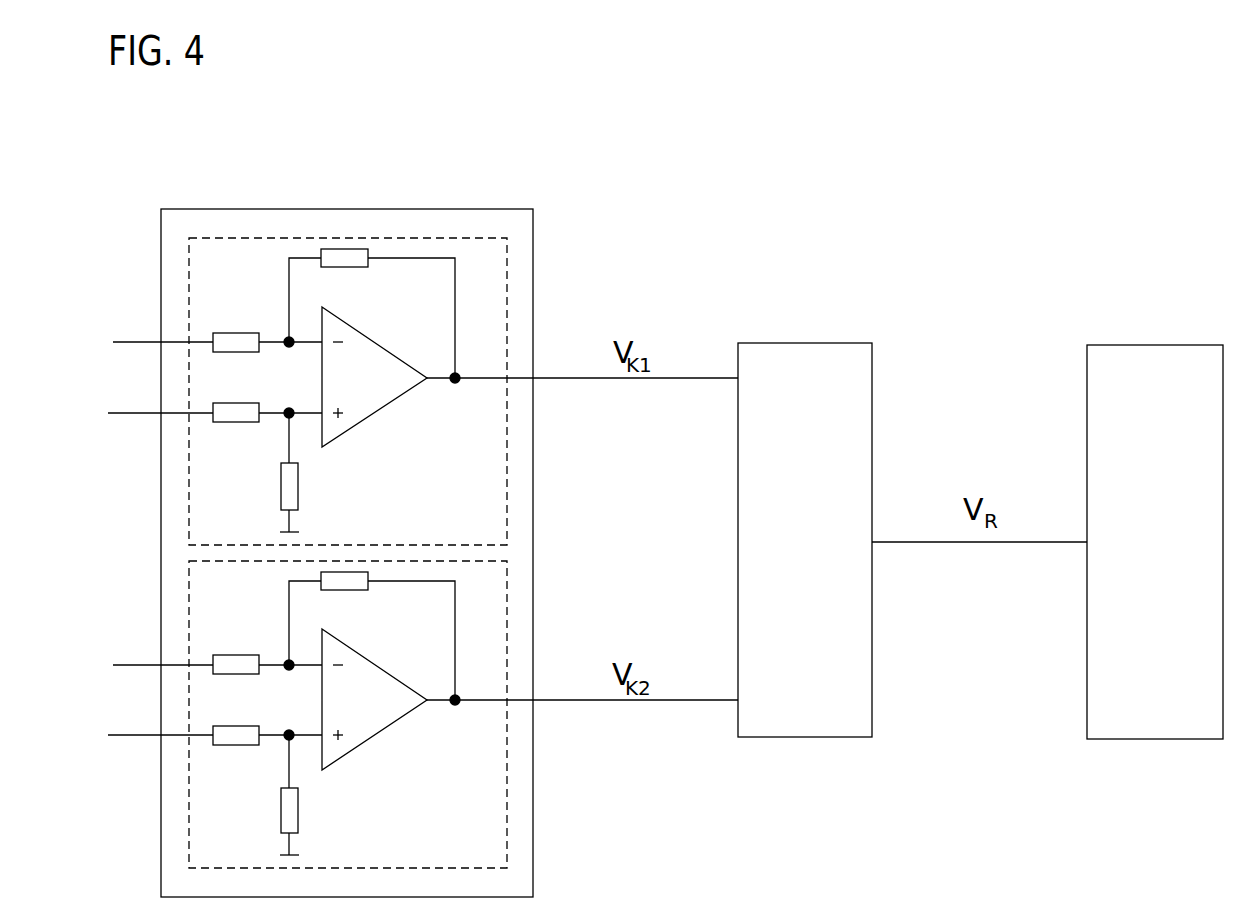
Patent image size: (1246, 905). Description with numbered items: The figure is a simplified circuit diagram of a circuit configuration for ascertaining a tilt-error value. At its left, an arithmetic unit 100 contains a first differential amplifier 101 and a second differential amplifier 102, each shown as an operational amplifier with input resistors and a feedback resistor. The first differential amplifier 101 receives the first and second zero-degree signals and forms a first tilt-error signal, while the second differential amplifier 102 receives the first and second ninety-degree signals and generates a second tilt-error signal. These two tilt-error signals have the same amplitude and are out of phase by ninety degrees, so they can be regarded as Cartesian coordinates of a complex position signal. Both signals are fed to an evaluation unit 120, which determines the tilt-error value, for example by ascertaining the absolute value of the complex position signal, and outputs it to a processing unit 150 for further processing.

The arithmetic unit 100 is at (358, 209).
The first differential amplifier 101 is at (508, 286).
The second differential amplifier 102 is at (507, 635).
The evaluation unit 120 is at (807, 390).
The processing unit 150 is at (1175, 368).